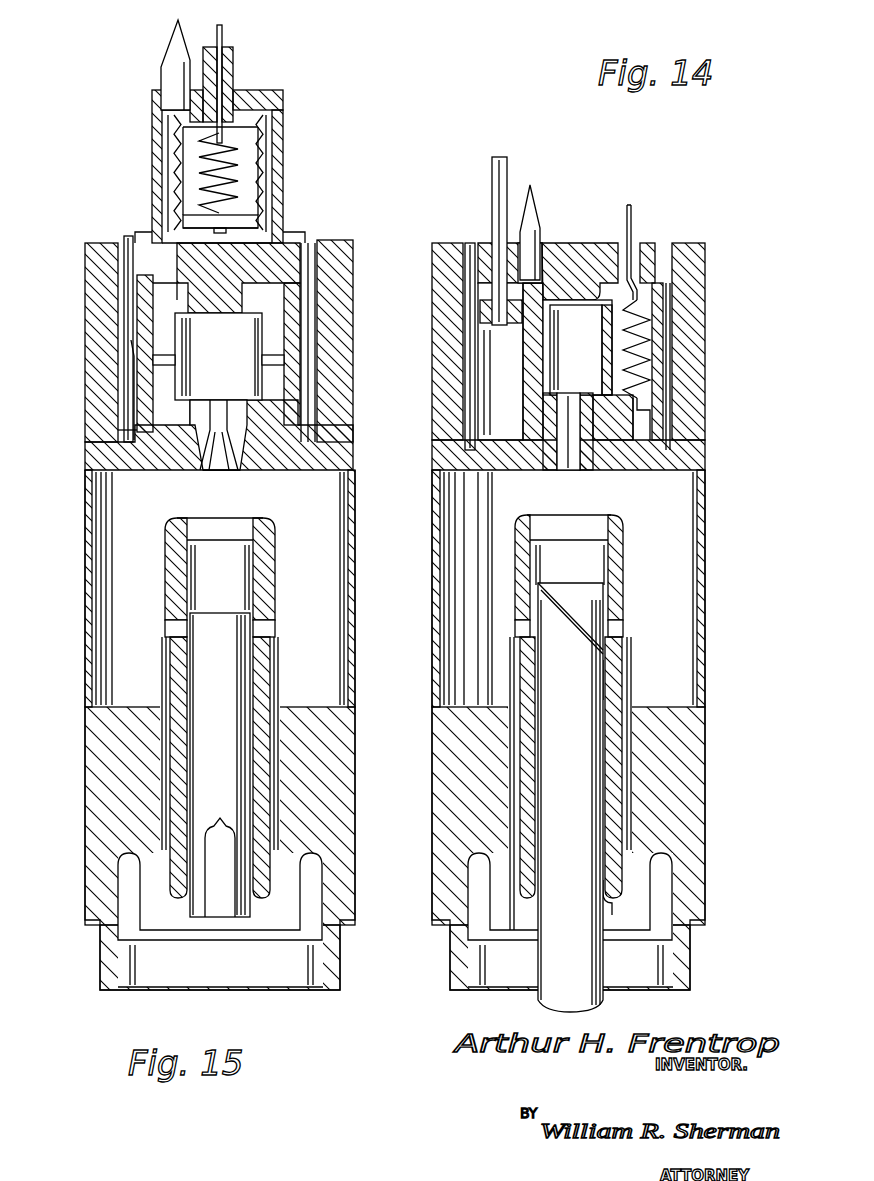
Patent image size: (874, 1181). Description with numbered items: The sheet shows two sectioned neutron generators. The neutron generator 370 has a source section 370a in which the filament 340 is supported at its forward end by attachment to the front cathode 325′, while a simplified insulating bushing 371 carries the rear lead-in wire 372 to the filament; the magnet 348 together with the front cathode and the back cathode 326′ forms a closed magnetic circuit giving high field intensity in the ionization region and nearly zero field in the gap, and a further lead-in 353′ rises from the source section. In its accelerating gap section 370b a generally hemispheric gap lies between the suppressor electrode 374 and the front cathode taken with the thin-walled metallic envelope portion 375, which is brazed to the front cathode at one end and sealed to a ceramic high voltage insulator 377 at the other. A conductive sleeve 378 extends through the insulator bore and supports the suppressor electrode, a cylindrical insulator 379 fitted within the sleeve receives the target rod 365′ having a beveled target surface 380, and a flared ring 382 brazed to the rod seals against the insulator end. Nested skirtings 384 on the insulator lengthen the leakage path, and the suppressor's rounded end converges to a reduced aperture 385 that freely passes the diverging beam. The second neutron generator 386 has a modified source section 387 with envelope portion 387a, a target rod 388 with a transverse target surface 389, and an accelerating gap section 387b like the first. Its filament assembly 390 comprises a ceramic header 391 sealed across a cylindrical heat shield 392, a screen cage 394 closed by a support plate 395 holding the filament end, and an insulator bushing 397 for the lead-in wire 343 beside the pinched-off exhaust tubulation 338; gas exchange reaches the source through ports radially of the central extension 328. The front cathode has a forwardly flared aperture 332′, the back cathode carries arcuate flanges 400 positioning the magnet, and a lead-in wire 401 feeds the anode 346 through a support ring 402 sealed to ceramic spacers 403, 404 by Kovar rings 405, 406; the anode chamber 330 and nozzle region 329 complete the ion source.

In FIG. 14, the front cathode 325′ is at (658, 470).
In FIG. 14, the back cathode 326′ is at (580, 243).
In FIG. 15, the central extension 328 is at (272, 302).
In FIG. 15, the nozzle cone 329 is at (208, 404).
In FIG. 15, the valve chamber 330 is at (206, 316).
In FIG. 15, the forwardly flared aperture 332′ is at (220, 470).
In FIG. 14, the forwardly flared aperture 332′ is at (566, 470).
In FIG. 15, the pinched-off exhaust tubulation 338 is at (160, 68).
In FIG. 14, the pinched-off exhaust tubulation 338 is at (540, 207).
In FIG. 15, the filament 340 is at (240, 170).
In FIG. 14, the filament 340 is at (646, 378).
In FIG. 15, the lead-in wire 343 is at (224, 30).
In FIG. 15, the anode 346 is at (268, 352).
In FIG. 14, the anode 346 is at (606, 346).
In FIG. 15, the permanent magnet 348 is at (340, 334).
In FIG. 14, the permanent magnet 348 is at (695, 256).
In FIG. 14, the rod 353′ is at (490, 176).
In FIG. 14, the target rod 365′ is at (606, 1006).
In FIG. 14, the neutron generator 370 is at (714, 512).
In FIG. 14, the source section 370a is at (663, 312).
In FIG. 14, the accelerating gap section 370b is at (714, 578).
In FIG. 14, the insulating bushing 371 is at (652, 243).
In FIG. 14, the rear lead-in wire 372 is at (632, 210).
In FIG. 14, the suppressor electrode 374 is at (624, 550).
In FIG. 14, the envelope portion 375 is at (714, 534).
In FIG. 14, the high voltage insulator 377 is at (690, 772).
In FIG. 14, the conductive sleeve 378 is at (624, 660).
In FIG. 14, the cylindrical insulator 379 is at (624, 698).
In FIG. 14, the target surface 380 is at (565, 600).
In FIG. 14, the flared ring 382 is at (612, 905).
In FIG. 14, the nested skirtings 384 is at (690, 962).
In FIG. 14, the aperture 385 is at (578, 516).
In FIG. 15, the neutron generator 386 is at (368, 550).
In FIG. 15, the source section 387 is at (368, 513).
In FIG. 15, the envelope portion 387a is at (310, 313).
In FIG. 15, the lower body 387b is at (368, 626).
In FIG. 15, the target rod 388 is at (235, 660).
In FIG. 15, the transverse target surface 389 is at (222, 608).
In FIG. 15, the filament assembly 390 is at (283, 118).
In FIG. 15, the ceramic header 391 is at (262, 90).
In FIG. 15, the heat shield 392 is at (283, 186).
In FIG. 15, the screen cage 394 is at (175, 152).
In FIG. 15, the support plate 395 is at (195, 215).
In FIG. 15, the insulator bushing 397 is at (233, 55).
In FIG. 15, the arcuate flanges 400 is at (310, 242).
In FIG. 15, the lead-in wire 401 is at (127, 240).
In FIG. 15, the support ring 402 is at (270, 358).
In FIG. 15, the ceramic spacer 403 is at (136, 402).
In FIG. 15, the ceramic spacer 404 is at (140, 325).
In FIG. 15, the Kovar ring 405 is at (136, 432).
In FIG. 15, the Kovar ring 406 is at (148, 298).